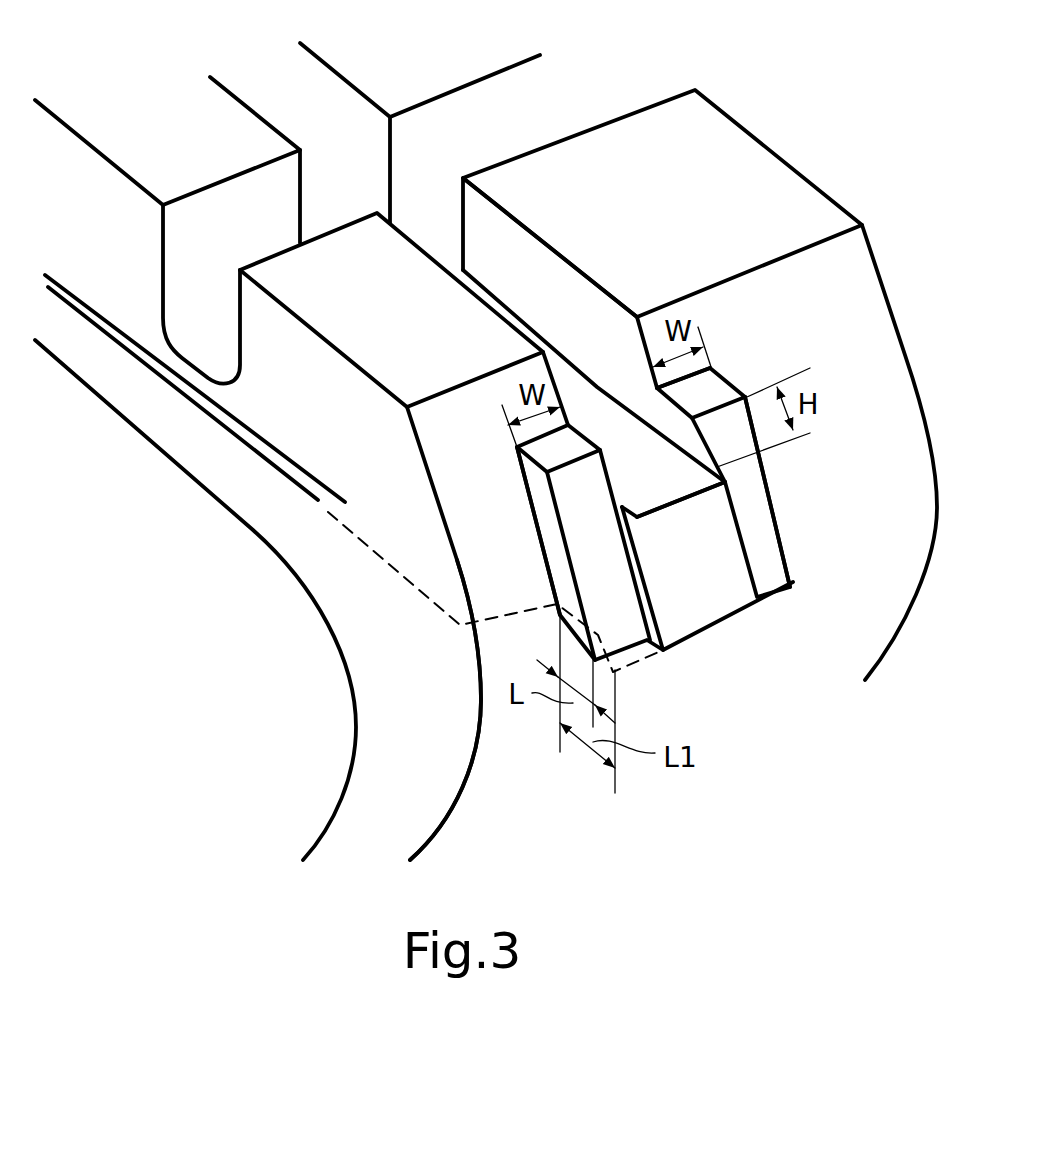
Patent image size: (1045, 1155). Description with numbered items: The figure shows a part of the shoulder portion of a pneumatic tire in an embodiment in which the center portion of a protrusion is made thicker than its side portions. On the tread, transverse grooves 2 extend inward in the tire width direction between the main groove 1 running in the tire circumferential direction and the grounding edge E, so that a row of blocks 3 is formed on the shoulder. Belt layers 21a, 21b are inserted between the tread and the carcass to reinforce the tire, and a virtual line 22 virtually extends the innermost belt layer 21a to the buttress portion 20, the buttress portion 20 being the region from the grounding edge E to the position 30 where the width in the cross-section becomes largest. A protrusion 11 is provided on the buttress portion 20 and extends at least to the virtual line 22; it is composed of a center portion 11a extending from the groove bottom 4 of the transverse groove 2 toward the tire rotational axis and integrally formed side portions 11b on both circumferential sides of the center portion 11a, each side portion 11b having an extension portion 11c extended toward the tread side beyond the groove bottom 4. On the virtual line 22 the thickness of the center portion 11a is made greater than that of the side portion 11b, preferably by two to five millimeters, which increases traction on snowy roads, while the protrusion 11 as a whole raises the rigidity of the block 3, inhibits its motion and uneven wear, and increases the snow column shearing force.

The main groove 1 is at (223, 230).
The transverse groove 2 is at (533, 287).
The block 3 is at (318, 302).
The groove bottom 4 is at (643, 460).
The protrusion 11 is at (790, 488).
The center portion 11a is at (680, 585).
The side portion 11b is at (542, 490).
The extension portion 11c is at (735, 423).
The buttress portion 20 is at (838, 297).
The innermost belt layer 21a is at (227, 435).
The belt layer 21b is at (287, 463).
The virtual line 22 is at (523, 617).
The position where the width becomes largest 30 is at (477, 743).
The grounding edge E is at (818, 247).